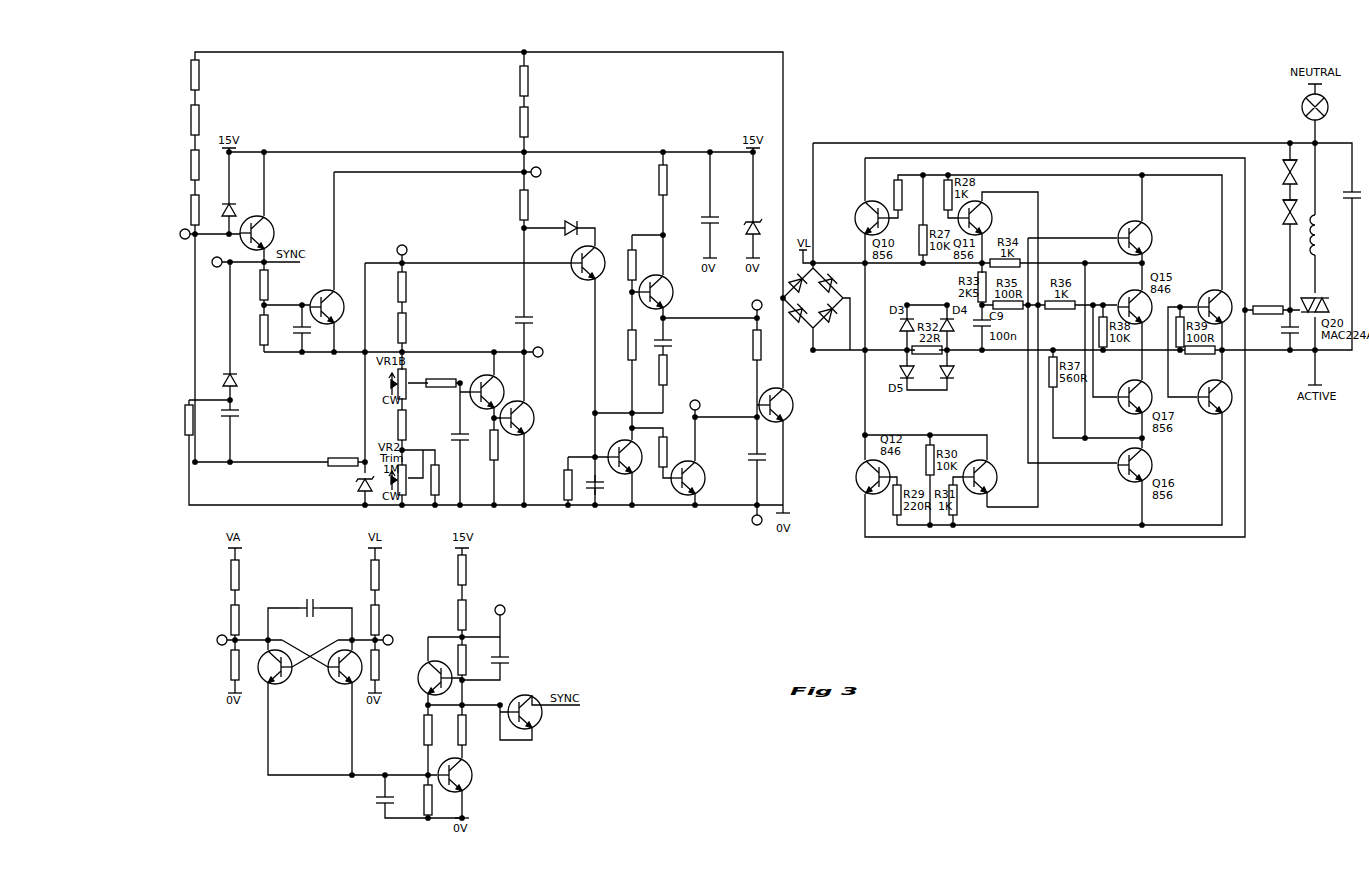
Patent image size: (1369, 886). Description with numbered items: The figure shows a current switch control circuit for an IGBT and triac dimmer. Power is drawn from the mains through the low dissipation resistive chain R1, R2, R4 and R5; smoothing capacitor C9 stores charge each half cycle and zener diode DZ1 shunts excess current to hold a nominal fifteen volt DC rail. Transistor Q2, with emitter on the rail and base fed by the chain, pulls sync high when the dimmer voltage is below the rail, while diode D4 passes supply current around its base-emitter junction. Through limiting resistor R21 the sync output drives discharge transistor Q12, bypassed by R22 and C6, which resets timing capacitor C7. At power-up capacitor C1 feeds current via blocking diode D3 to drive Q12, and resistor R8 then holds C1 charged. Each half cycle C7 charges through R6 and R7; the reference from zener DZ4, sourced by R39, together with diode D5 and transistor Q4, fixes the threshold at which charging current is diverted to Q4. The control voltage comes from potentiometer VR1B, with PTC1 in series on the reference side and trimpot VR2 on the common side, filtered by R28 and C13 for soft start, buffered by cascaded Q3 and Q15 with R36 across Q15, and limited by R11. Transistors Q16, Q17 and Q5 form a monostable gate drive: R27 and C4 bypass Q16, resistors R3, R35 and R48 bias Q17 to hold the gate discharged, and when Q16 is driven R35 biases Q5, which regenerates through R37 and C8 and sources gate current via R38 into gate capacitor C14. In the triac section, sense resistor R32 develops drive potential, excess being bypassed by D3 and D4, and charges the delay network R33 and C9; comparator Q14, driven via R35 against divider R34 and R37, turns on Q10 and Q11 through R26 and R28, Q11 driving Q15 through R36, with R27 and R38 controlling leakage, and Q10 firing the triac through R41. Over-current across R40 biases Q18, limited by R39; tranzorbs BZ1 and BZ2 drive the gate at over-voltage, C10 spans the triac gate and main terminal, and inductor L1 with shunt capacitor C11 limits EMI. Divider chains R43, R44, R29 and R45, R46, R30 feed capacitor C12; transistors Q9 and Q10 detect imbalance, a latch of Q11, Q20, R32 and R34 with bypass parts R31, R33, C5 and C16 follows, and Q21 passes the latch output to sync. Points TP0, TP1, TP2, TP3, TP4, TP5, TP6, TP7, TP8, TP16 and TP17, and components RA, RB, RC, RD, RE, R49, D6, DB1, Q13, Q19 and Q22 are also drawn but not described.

The resistive chain resistor R1 is at (207, 75).
The resistive chain resistor R2 is at (207, 120).
The resistive chain resistor R4 is at (207, 165).
The resistive chain resistor R5 is at (207, 210).
The base-emitter shunting diode D4 is at (245, 196).
The sync transistor Q2 is at (265, 221).
The test point TP1 is at (174, 234).
The test point TP2 is at (214, 255).
The limiting resistor R21 is at (279, 285).
The base-emitter bypass resistor R22 is at (279, 330).
The base-emitter bypass capacitor C6 is at (308, 330).
The discharge transistor Q12 is at (338, 316).
The blocking diode D3 is at (249, 380).
The power-up inhibit capacitor C1 is at (240, 415).
The holding resistor R8 is at (178, 420).
The reference source resistor R39 is at (343, 451).
The reference zener diode DZ4 is at (355, 484).
The test point TP3 is at (399, 244).
The conduction angle limiting resistor R11 is at (414, 287).
The positive temperature coefficient thermistor PTC1 is at (424, 328).
The main dimmer control potentiometer VR1B is at (398, 384).
The RC filter resistor R28 is at (441, 371).
The resistor RA is at (410, 425).
The trimpot VR2 is at (398, 480).
The resistor R49 is at (446, 480).
The RC filter capacitor C13 is at (472, 436).
The buffer transistor Q3 is at (496, 385).
The buffer transistor Q15 is at (530, 420).
The base-emitter bypass resistor R36 is at (509, 446).
The timing capacitor C7 is at (533, 317).
The test point TP5 is at (549, 352).
The test point TP4 is at (547, 172).
The current limiting resistor R6 is at (537, 81).
The current limiting resistor R7 is at (537, 122).
The resistor RD is at (515, 205).
The series diode D5 is at (578, 212).
The threshold transistor Q4 is at (581, 272).
The resistor RC is at (655, 180).
The bias resistor R3 is at (622, 265).
The gate current source transistor Q5 is at (664, 285).
The smoothing capacitor C9 is at (703, 220).
The voltage regulating zener diode DZ1 is at (742, 226).
The test point TP7 is at (755, 299).
The gate current limiting resistor R38 is at (743, 345).
The bias resistor R35 is at (620, 345).
The regenerative network capacitor C8 is at (669, 343).
The regenerative network resistor R37 is at (678, 370).
The test point TP8 is at (694, 399).
The bias resistor R48 is at (678, 449).
The input transistor Q16 is at (636, 463).
The gate discharge transistor Q17 is at (699, 478).
The base-emitter bypass resistor R27 is at (556, 484).
The base-emitter bypass capacitor C4 is at (590, 482).
The gate capacitor C14 is at (752, 456).
The test point TP0 is at (755, 527).
The IGBT transistor Q22 is at (805, 415).
The diode bridge DB1 is at (827, 292).
The base current limiting resistor R26 is at (886, 191).
The output transistor Q10 is at (341, 679).
The drive transistor Q11 is at (426, 685).
The voltage divider resistor R34 is at (474, 730).
The time delay resistor R33 is at (477, 660).
The current sense resistor R32 is at (440, 730).
The diode D6 is at (970, 384).
The comparator transistor Q14 is at (1145, 228).
The over-current protection transistor Q18 is at (1215, 297).
The current sense resistor R40 is at (1203, 363).
The transistor Q19 is at (1215, 412).
The transistor Q13 is at (989, 466).
The divider chain resistor R30 is at (390, 665).
The divider chain resistor R29 is at (221, 665).
The base-emitter bypass resistor R31 is at (415, 798).
The current limiting resistor R41 is at (1268, 298).
The triac gate capacitor C10 is at (1279, 330).
The latch transistor Q20 is at (467, 783).
The tranzorb BZ1 is at (1275, 172).
The tranzorb BZ2 is at (1275, 212).
The shunt capacitor C11 is at (1344, 192).
The inductor L1 is at (1330, 171).
The divider chain resistor R43 is at (223, 575).
The divider chain resistor R44 is at (223, 620).
The test point TP16 is at (208, 640).
The differential capacitor C12 is at (310, 595).
The imbalance detector transistor Q9 is at (283, 679).
The divider chain resistor R45 is at (388, 575).
The divider chain resistor R46 is at (388, 620).
The test point TP17 is at (403, 640).
The resistor RB is at (470, 570).
The resistor RE is at (470, 615).
The test point TP6 is at (499, 604).
The EFT immunity capacitor C16 is at (511, 659).
The blocking diode transistor Q21 is at (537, 720).
The EFT immunity capacitor C5 is at (377, 798).